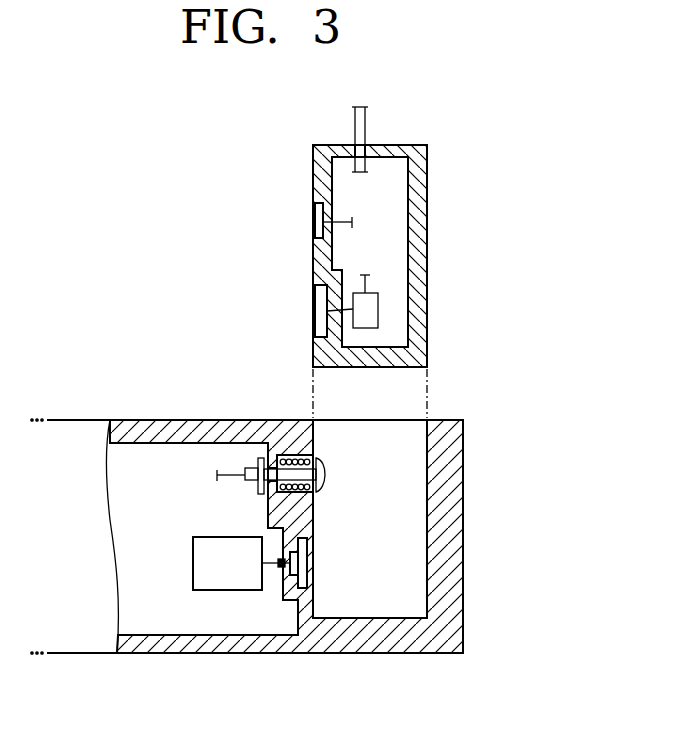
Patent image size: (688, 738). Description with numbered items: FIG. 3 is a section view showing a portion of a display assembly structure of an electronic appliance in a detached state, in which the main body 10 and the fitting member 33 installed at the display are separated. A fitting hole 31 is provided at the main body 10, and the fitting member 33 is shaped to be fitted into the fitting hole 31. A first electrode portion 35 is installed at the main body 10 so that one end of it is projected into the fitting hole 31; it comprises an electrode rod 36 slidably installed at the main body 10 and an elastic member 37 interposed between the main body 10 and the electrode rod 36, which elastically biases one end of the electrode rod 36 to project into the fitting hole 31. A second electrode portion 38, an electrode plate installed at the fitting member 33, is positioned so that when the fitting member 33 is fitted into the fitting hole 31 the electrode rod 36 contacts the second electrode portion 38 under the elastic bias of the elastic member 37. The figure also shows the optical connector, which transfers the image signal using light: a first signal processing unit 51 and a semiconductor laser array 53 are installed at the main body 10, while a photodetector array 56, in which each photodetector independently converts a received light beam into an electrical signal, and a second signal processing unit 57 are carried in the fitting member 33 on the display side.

The main body 10 is at (472, 572).
The fitting hole 31 is at (390, 582).
The fitting member 33 is at (432, 203).
The first electrode portion 35 is at (333, 469).
The electrode rod 36 is at (257, 462).
The elastic member 37 is at (300, 458).
The second electrode portion 38 is at (315, 220).
The first signal processing unit 51 is at (193, 563).
The semiconductor laser array 53 is at (290, 598).
The photodetector array 56 is at (315, 287).
The second signal processing unit 57 is at (378, 305).